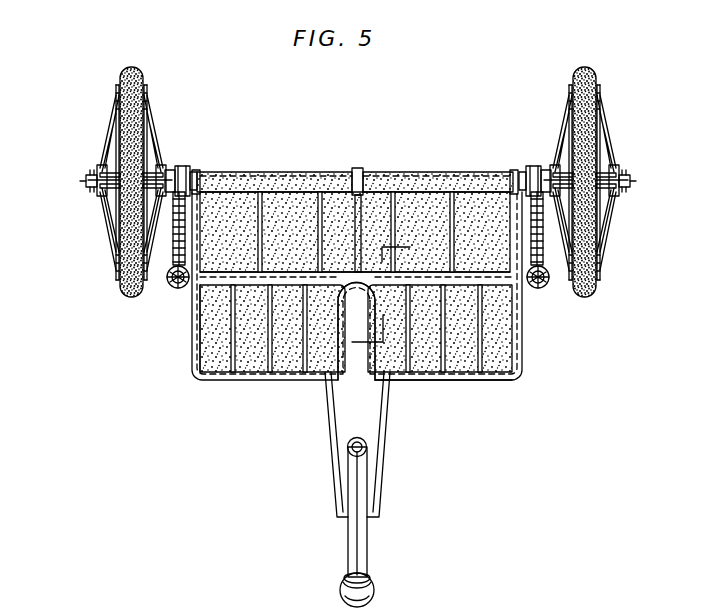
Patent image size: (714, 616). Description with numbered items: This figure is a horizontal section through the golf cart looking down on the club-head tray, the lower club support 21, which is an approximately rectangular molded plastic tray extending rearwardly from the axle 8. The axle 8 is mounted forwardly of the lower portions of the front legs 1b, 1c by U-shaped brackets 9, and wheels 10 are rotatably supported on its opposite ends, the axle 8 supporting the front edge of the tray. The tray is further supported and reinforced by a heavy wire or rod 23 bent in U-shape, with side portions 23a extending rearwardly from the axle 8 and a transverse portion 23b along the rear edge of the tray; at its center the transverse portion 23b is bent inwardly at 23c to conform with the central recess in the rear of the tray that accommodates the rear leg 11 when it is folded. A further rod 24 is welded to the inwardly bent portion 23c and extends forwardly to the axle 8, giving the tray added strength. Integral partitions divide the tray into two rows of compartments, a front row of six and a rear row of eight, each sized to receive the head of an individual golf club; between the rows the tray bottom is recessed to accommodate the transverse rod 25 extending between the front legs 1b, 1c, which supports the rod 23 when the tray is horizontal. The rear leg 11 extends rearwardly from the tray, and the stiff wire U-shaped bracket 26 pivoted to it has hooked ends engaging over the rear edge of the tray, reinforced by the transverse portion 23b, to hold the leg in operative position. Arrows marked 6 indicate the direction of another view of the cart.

The wheels 10 is at (118, 85).
The axle 8 is at (80, 181).
The U-shaped brackets 9 is at (182, 173).
The front leg portion 1b is at (178, 290).
The front leg portion 1c is at (538, 290).
The rod 24 is at (363, 212).
The transverse rod 25 is at (455, 276).
The lower club support 21 is at (520, 386).
The rod 23 is at (258, 389).
The side portions 23a is at (192, 338).
The transverse portion 23b is at (424, 380).
The inwardly bent portion 23c is at (362, 335).
The U-shaped bracket 26 is at (378, 492).
The rear leg 11 is at (367, 548).
The cushion 6 is at (74, 350).